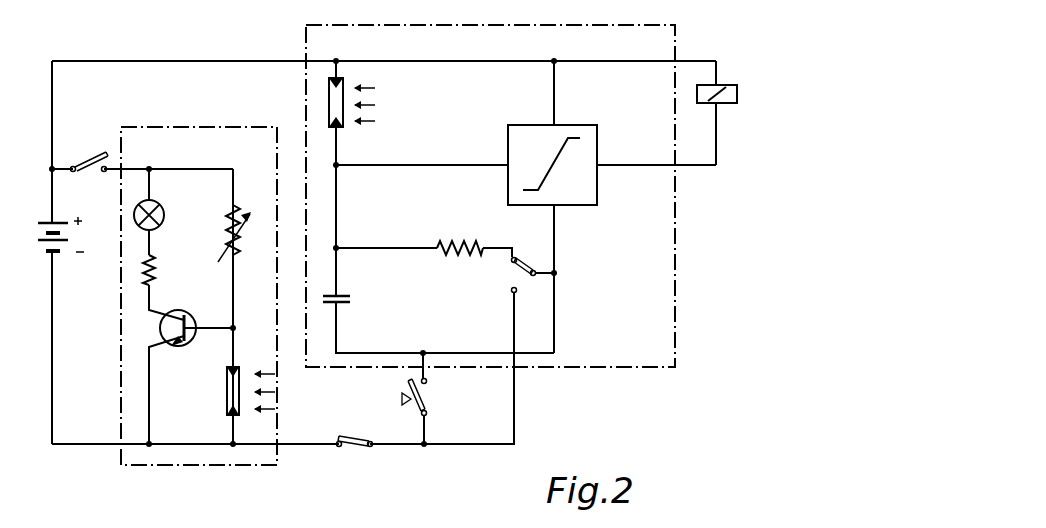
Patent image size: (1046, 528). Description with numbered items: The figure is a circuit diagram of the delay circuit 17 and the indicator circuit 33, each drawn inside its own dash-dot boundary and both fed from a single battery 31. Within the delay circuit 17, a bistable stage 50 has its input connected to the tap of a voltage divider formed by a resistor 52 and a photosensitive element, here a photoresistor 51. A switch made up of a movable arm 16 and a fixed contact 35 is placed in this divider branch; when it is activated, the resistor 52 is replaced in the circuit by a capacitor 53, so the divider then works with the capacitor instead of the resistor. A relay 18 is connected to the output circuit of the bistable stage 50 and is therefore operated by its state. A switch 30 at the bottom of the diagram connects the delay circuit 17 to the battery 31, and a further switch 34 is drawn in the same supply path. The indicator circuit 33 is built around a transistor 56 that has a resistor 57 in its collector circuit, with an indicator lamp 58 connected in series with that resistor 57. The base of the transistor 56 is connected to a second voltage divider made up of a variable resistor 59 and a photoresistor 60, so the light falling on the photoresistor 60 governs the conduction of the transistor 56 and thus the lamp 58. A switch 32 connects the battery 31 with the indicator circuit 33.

The movable arm 16 is at (518, 258).
The delay circuit 17 is at (322, 38).
The relay 18 is at (727, 106).
The switch 30 is at (428, 386).
The battery 31 is at (74, 235).
The switch 32 is at (108, 153).
The indicator circuit 33 is at (204, 136).
The switch 34 is at (336, 437).
The fixed contact 35 is at (512, 288).
The bistable stage 50 is at (510, 144).
The photoresistor 51 is at (329, 106).
The resistor 52 is at (456, 244).
The capacitor 53 is at (364, 300).
The transistor 56 is at (166, 320).
The resistor 57 is at (156, 268).
The indicator lamp 58 is at (165, 208).
The variable resistor 59 is at (248, 244).
The photoresistor 60 is at (228, 397).